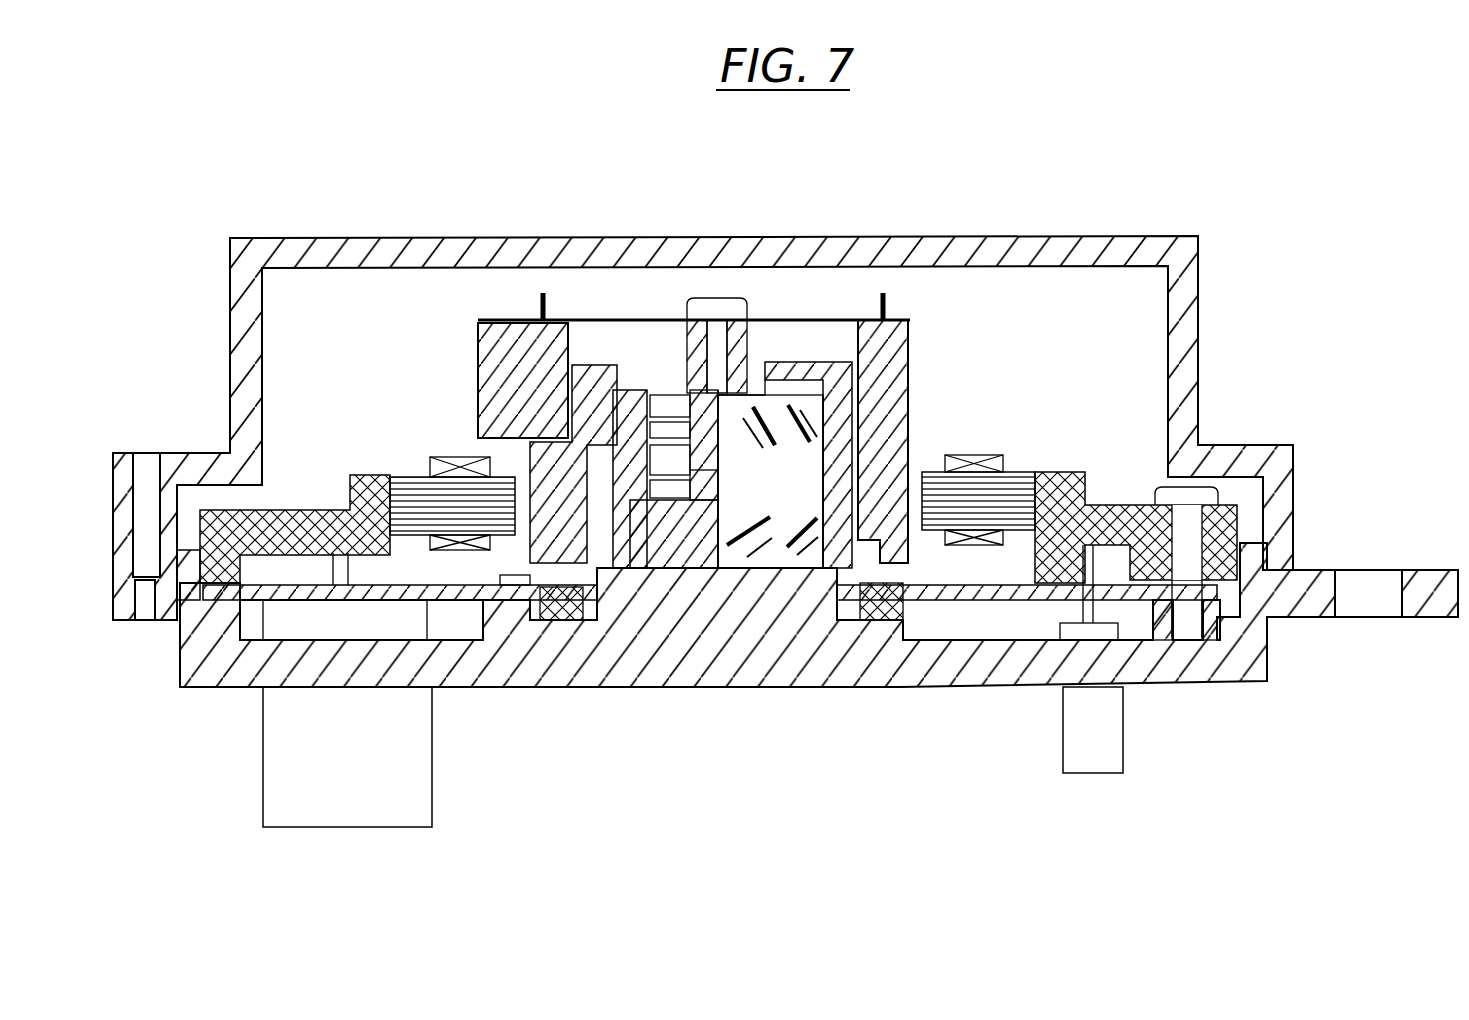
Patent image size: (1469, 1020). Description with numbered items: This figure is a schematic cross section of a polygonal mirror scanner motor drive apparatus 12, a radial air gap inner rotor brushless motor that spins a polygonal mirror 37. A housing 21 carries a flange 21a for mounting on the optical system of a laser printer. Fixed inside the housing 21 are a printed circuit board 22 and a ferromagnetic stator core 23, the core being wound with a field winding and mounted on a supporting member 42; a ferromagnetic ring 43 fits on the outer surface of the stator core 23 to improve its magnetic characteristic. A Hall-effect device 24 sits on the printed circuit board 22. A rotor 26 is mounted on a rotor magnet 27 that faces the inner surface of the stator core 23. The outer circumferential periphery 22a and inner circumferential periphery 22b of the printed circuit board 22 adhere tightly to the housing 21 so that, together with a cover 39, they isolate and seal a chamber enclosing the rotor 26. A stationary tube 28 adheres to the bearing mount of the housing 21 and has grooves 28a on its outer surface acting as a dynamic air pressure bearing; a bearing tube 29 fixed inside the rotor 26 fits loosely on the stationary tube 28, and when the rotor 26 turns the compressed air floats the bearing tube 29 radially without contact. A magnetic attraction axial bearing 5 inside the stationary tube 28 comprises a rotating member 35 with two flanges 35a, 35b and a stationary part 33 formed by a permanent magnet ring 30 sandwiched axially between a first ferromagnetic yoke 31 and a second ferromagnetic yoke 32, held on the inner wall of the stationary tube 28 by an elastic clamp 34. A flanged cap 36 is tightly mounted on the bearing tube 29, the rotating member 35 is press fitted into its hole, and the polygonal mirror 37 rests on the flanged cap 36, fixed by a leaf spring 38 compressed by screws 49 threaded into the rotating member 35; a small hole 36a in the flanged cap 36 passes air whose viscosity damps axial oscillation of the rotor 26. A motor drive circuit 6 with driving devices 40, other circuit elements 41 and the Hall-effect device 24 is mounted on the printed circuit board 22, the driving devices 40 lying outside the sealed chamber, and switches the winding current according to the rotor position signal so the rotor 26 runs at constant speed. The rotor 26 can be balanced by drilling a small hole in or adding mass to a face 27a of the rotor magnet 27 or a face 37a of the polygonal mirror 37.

The magnetic attraction axial bearing 5 is at (750, 475).
The motor drive circuit 6 is at (992, 608).
The polygonal mirror scanner motor drive apparatus 12 is at (1046, 166).
The housing 21 is at (1248, 622).
The flange 21a is at (1315, 603).
The printed circuit board 22 is at (1111, 586).
The outer circumferential periphery 22a is at (217, 590).
The inner circumferential periphery 22b is at (542, 618).
The ferromagnetic stator core 23 is at (935, 522).
The Hall-effect device 24 is at (504, 585).
The rotor 26 is at (916, 418).
The rotor magnet 27 is at (865, 537).
The face of the rotor magnet 27a is at (579, 558).
The stationary tube 28 is at (748, 557).
The grooves 28a is at (768, 400).
The bearing tube 29 is at (598, 402).
The permanent magnet ring 30 is at (700, 482).
The first ferromagnetic yoke 31 is at (668, 460).
The second ferromagnetic yoke 32 is at (653, 483).
The stationary part 33 is at (787, 796).
The elastic clamp 34 is at (657, 406).
The rotating member 35 is at (703, 400).
The flange 35a is at (712, 441).
The flange 35b is at (694, 485).
The flanged cap 36 is at (905, 447).
The small hole 36a is at (792, 368).
The polygonal mirror 37 is at (905, 372).
The face of the polygonal mirror 37a is at (556, 314).
The leaf spring 38 is at (762, 357).
The cover 39 is at (1195, 240).
The driving devices 40 is at (1097, 752).
The other circuit elements 41 is at (320, 778).
The supporting member 42 is at (1128, 528).
The ferromagnetic ring 43 is at (1040, 523).
The screws 49 is at (715, 305).